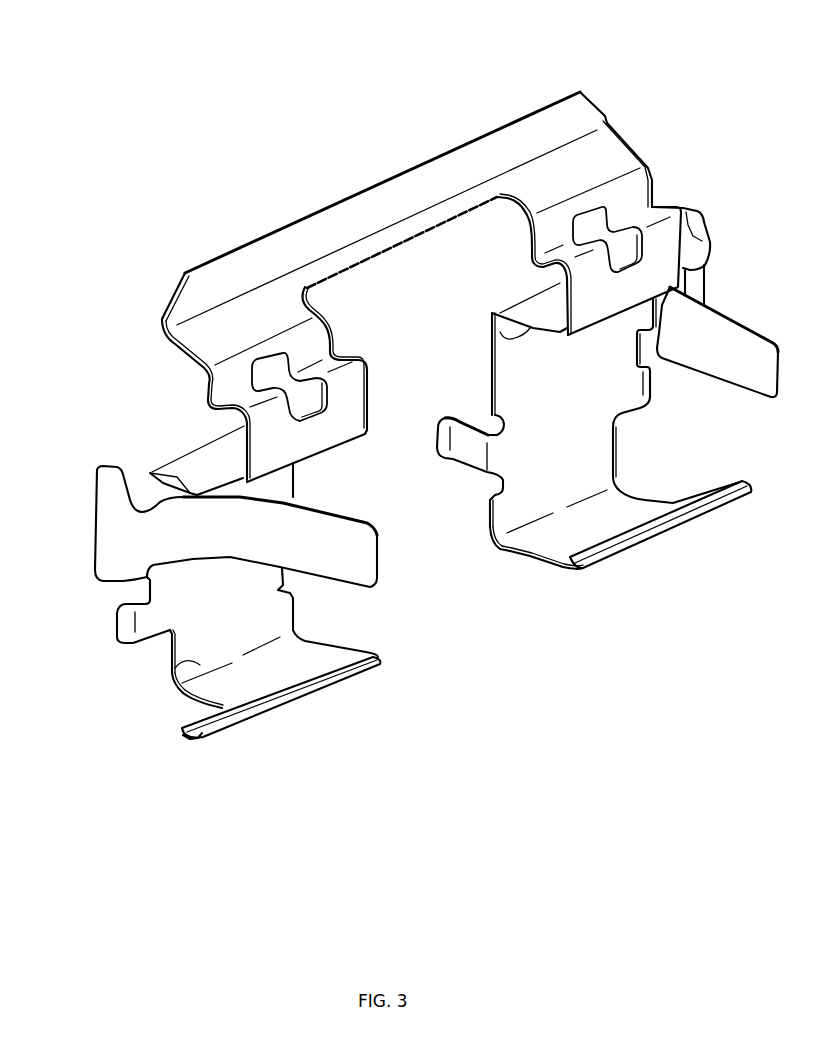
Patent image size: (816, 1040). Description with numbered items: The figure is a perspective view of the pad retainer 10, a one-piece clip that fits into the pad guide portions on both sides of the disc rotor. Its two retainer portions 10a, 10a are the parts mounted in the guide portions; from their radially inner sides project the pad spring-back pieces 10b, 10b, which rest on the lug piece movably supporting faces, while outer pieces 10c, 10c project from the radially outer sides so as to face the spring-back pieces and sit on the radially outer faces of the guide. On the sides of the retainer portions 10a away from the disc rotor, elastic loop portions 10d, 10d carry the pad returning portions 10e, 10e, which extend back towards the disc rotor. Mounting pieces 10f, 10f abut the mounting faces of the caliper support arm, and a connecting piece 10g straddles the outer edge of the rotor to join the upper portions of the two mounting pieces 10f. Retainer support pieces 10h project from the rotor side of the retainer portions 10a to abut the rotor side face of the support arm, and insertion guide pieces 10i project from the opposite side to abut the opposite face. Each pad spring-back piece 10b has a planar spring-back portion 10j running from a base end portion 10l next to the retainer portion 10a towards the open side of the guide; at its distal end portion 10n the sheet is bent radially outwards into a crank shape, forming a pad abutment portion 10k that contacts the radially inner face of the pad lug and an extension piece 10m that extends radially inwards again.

The pad retainer 10 is at (421, 92).
The retainer portion 10a is at (285, 490).
The pad spring-back piece 10b is at (351, 646).
The outer piece 10c is at (193, 462).
The elastic loop portion 10d is at (103, 535).
The pad returning portion 10e is at (360, 552).
The mounting piece 10f is at (337, 362).
The connecting piece 10g is at (393, 197).
The retainer support piece 10h is at (457, 463).
The insertion guide piece 10i is at (127, 625).
The spring-back portion 10j is at (190, 697).
The pad abutment portion 10k is at (267, 698).
The base end portion 10l is at (172, 673).
The extension piece 10m is at (240, 720).
The distal end portion 10n is at (193, 740).